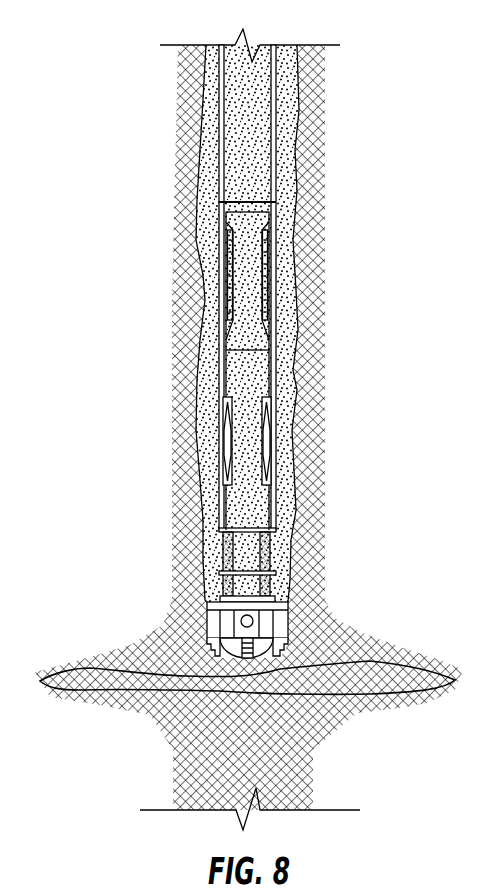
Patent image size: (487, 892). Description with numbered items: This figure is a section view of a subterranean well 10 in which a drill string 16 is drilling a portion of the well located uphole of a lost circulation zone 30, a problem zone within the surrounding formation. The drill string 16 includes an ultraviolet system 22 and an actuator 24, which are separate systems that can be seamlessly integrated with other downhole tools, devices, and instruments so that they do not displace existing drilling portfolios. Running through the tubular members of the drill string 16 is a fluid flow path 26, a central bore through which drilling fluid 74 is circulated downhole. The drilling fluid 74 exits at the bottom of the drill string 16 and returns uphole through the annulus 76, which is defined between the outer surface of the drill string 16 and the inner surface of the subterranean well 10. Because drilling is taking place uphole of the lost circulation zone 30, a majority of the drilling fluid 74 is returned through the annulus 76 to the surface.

The subterranean well 10 is at (112, 278).
The drill string 16 is at (277, 157).
The ultraviolet system 22 is at (268, 440).
The actuator 24 is at (268, 290).
The fluid flow path 26 is at (232, 137).
The lost circulation zone 30 is at (365, 660).
The drilling fluid 74 is at (258, 91).
The annulus 76 is at (208, 190).